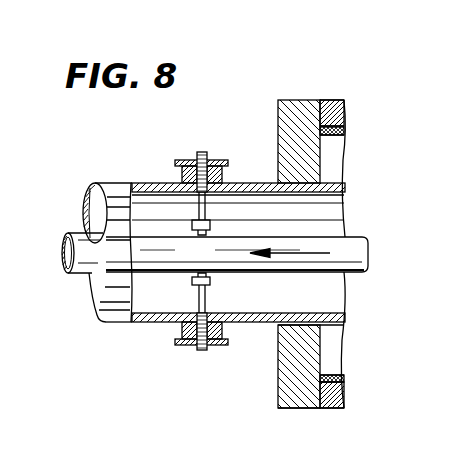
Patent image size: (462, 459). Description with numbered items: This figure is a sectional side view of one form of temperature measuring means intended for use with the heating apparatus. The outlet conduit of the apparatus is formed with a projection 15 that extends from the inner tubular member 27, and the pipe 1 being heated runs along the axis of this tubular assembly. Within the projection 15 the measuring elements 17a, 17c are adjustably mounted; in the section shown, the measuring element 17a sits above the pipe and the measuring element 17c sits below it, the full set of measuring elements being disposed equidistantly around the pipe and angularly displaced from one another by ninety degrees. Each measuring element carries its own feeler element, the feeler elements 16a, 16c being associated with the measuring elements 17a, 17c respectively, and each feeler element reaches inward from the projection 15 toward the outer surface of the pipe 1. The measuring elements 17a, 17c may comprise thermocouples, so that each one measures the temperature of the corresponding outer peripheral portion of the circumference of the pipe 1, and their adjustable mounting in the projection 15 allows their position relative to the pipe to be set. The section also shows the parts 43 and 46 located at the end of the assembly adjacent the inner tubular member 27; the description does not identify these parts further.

The pipe 1 is at (355, 245).
The projection 15 is at (150, 186).
The feeler element 16a is at (212, 230).
The feeler element 16c is at (218, 272).
The measuring element 17a is at (203, 156).
The measuring element 17c is at (193, 348).
The inner tubular member 27 is at (345, 188).
The support block 43 is at (303, 117).
The seal ring 46 is at (353, 131).